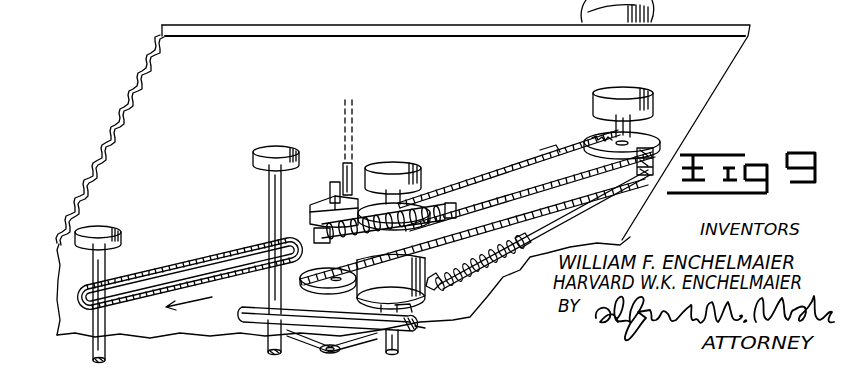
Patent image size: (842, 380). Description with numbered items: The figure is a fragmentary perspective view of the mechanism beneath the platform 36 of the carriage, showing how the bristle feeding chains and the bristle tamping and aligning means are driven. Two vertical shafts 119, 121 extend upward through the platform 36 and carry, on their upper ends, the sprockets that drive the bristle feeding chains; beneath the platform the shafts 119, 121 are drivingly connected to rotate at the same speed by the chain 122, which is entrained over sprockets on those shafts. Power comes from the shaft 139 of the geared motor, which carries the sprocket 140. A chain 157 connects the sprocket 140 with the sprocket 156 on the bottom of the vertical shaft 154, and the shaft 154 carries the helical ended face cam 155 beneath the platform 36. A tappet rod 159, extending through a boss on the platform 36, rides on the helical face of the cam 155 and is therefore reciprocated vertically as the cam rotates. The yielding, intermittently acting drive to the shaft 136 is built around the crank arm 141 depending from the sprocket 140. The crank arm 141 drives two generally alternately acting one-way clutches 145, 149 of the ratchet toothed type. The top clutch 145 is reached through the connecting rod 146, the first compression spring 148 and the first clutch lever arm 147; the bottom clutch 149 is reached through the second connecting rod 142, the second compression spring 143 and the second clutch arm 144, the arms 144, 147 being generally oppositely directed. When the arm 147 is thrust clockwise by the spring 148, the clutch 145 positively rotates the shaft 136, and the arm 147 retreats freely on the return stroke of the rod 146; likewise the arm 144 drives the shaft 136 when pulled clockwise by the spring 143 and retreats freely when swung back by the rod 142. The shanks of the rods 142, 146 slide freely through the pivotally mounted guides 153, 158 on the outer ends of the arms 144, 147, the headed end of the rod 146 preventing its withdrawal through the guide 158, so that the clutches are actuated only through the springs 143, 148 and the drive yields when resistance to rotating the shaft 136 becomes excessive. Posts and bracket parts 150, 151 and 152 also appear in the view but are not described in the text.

The platform 36 is at (270, 25).
The shaft 119 is at (109, 262).
The vertical shaft 121 is at (268, 222).
The chain 122 is at (170, 266).
The shaft 136 is at (414, 188).
The shaft of the geared motor 139 is at (628, 130).
The sprocket 140 is at (598, 138).
The crank arm 141 is at (656, 158).
The second connecting rod 142 is at (530, 160).
The second compression spring 143 is at (355, 272).
The second clutch arm 144 is at (391, 290).
The one-way clutch 145 is at (412, 206).
The connecting rod 146 is at (562, 222).
The first clutch lever arm 147 is at (440, 268).
The first compression spring 148 is at (495, 268).
The one-way clutch 149 is at (410, 306).
The support post 150 is at (275, 353).
The bracket link 151 is at (352, 348).
The base bracket 152 is at (250, 330).
The guide 153 is at (428, 249).
The vertical shaft 154 is at (322, 236).
The helical ended face cam 155 is at (310, 215).
The sprocket 156 is at (314, 290).
The chain 157 is at (548, 163).
The guide 158 is at (433, 330).
The tappet rod 159 is at (343, 170).